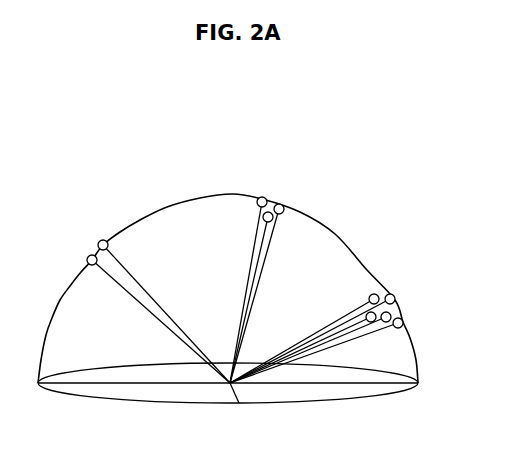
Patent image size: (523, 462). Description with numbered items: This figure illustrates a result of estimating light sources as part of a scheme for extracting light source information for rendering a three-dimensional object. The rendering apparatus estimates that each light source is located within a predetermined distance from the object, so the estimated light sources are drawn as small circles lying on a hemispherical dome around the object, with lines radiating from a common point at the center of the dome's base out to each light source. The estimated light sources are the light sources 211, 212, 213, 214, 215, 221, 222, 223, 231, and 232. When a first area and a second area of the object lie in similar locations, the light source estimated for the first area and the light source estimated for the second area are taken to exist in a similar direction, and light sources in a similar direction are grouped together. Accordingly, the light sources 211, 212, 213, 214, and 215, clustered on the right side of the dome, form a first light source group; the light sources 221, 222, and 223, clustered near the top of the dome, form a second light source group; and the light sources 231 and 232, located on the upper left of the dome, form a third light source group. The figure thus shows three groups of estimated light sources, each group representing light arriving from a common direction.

The light source 211 is at (378, 294).
The light source 212 is at (395, 296).
The light source 213 is at (391, 316).
The light source 214 is at (376, 322).
The light source 215 is at (403, 324).
The light source 221 is at (260, 197).
The light source 222 is at (284, 204).
The light source 223 is at (287, 205).
The light source 231 is at (87, 256).
The light source 232 is at (102, 240).